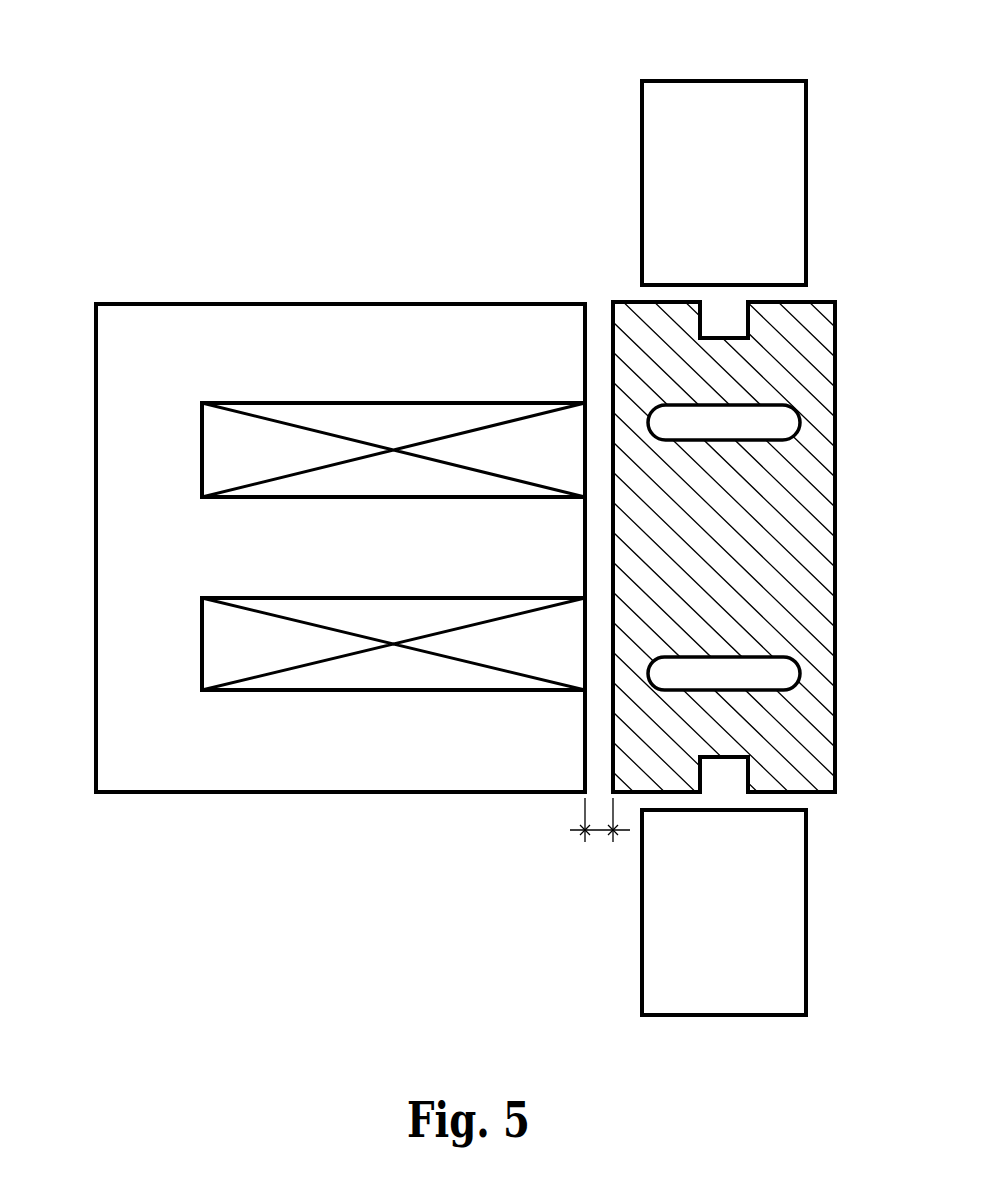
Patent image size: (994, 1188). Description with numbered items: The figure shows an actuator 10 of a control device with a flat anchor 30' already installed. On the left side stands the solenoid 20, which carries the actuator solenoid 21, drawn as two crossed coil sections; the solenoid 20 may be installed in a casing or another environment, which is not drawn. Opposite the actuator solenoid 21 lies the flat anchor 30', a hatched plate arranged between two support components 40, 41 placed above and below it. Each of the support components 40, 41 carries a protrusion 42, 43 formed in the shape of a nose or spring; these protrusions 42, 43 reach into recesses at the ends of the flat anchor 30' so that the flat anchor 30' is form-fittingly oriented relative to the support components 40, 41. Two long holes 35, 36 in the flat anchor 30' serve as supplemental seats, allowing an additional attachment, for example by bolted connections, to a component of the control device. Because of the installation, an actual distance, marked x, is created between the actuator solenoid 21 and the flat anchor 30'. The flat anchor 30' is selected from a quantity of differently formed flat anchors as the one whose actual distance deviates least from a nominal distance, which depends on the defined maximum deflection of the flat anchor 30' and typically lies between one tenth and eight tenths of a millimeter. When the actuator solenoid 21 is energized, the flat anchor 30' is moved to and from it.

The actuator 10 is at (461, 100).
The solenoid 20 is at (364, 318).
The actuator solenoid 21 is at (218, 441).
The flat anchor 30' is at (759, 534).
The long hole 35 is at (770, 424).
The long hole 36 is at (770, 673).
The support component 40 is at (790, 150).
The support component 41 is at (795, 920).
The protrusion 42 is at (731, 315).
The protrusion 43 is at (731, 777).